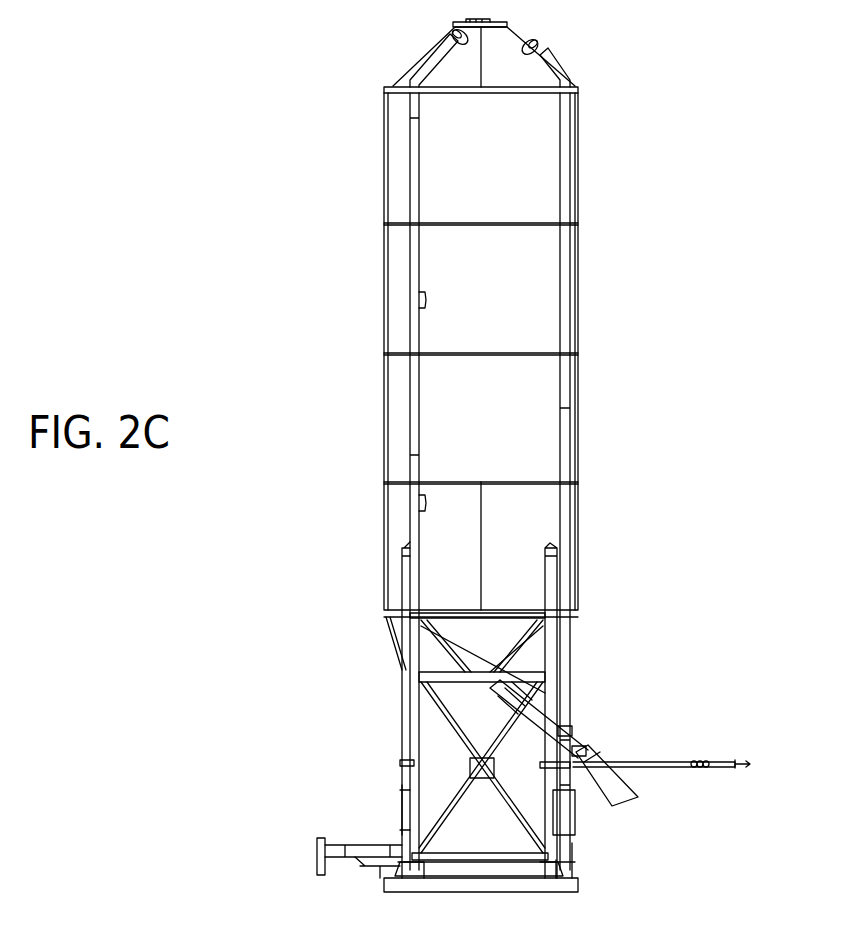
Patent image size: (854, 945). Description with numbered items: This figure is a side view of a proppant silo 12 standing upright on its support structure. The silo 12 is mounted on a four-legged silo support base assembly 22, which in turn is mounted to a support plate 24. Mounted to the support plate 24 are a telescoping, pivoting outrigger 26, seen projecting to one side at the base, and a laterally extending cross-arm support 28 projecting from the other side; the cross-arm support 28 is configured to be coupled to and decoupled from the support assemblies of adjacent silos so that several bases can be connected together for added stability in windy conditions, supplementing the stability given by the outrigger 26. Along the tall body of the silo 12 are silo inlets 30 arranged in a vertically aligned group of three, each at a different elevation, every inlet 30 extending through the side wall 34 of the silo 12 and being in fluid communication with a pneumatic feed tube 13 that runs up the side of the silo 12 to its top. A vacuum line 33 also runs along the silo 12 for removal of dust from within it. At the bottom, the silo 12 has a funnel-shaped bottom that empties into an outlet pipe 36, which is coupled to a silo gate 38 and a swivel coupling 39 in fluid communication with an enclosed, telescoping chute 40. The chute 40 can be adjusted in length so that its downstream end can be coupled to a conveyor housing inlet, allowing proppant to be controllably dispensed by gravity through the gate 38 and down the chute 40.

The silo 12 is at (332, 252).
The pneumatic feed tube 13 is at (412, 200).
The silo support base assembly 22 is at (405, 680).
The support plate 24 is at (578, 888).
The outrigger 26 is at (334, 842).
The cross-arm support 28 is at (701, 760).
The silo inlet 30 is at (448, 34).
The vacuum line 33 is at (568, 146).
The side wall 34 is at (400, 146).
The outlet pipe 36 is at (538, 718).
The silo gate 38 is at (548, 690).
The swivel coupling 39 is at (575, 748).
The telescoping chute 40 is at (628, 800).